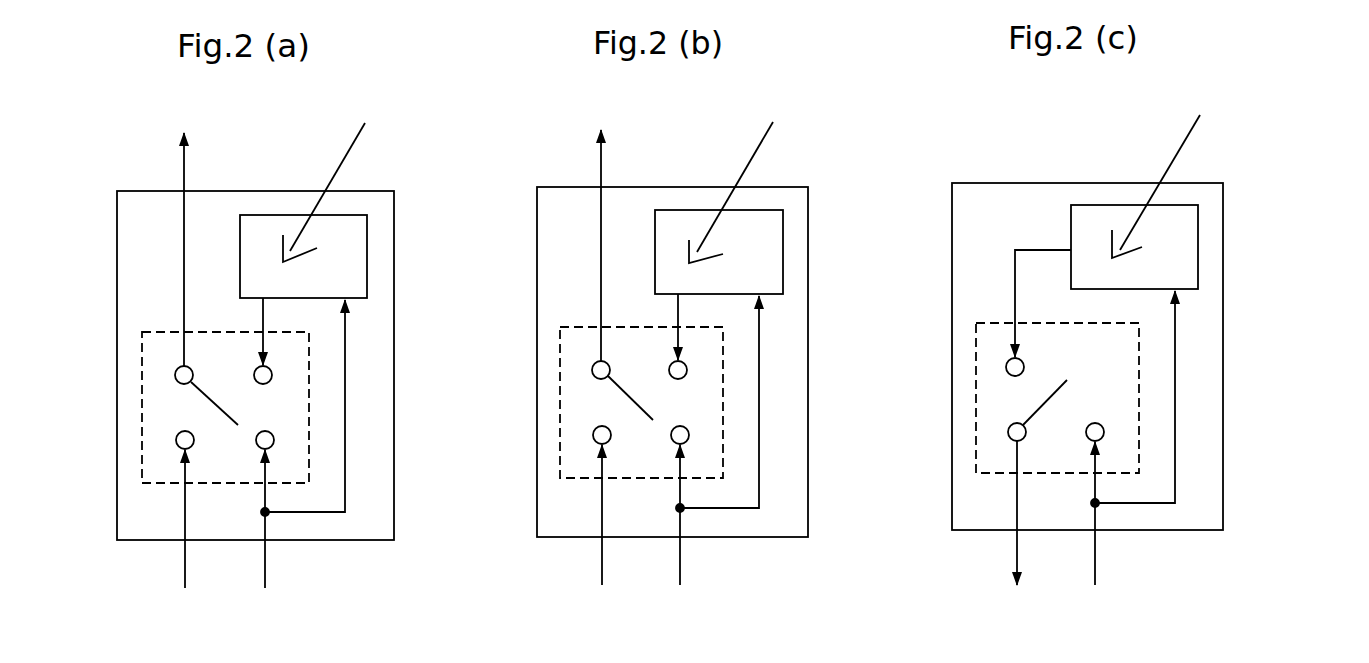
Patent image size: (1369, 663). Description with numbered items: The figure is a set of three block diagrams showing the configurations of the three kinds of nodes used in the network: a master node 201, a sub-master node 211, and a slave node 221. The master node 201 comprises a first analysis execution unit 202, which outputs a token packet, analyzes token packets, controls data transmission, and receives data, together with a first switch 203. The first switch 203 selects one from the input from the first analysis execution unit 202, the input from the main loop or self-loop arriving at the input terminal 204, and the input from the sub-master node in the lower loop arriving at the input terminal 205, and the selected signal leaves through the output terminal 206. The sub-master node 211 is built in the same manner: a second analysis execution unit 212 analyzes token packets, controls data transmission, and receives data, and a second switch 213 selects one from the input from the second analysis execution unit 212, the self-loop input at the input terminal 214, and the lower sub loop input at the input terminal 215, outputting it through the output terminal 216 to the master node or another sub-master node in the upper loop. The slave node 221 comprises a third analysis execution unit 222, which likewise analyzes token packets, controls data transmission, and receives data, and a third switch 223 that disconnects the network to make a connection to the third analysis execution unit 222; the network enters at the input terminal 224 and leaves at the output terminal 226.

The master node 201 is at (266, 190).
The first analysis execution unit 202 is at (367, 258).
The first switch 203 is at (142, 378).
The input terminal from the self-loop 204 is at (267, 562).
The input terminal from the lower loop 205 is at (183, 572).
The output terminal 206 is at (181, 166).
The sub-master node 211 is at (680, 186).
The second analysis execution unit 212 is at (783, 253).
The second switch 213 is at (560, 376).
The input terminal from the self-loop 214 is at (682, 558).
The input terminal from the lower loop 215 is at (600, 567).
The output terminal to the upper loop 216 is at (598, 166).
The slave node 221 is at (1096, 182).
The third analysis execution unit 222 is at (1198, 250).
The third switch 223 is at (975, 372).
The input terminal from the network 224 is at (1097, 553).
The output terminal to the network 226 is at (1013, 562).